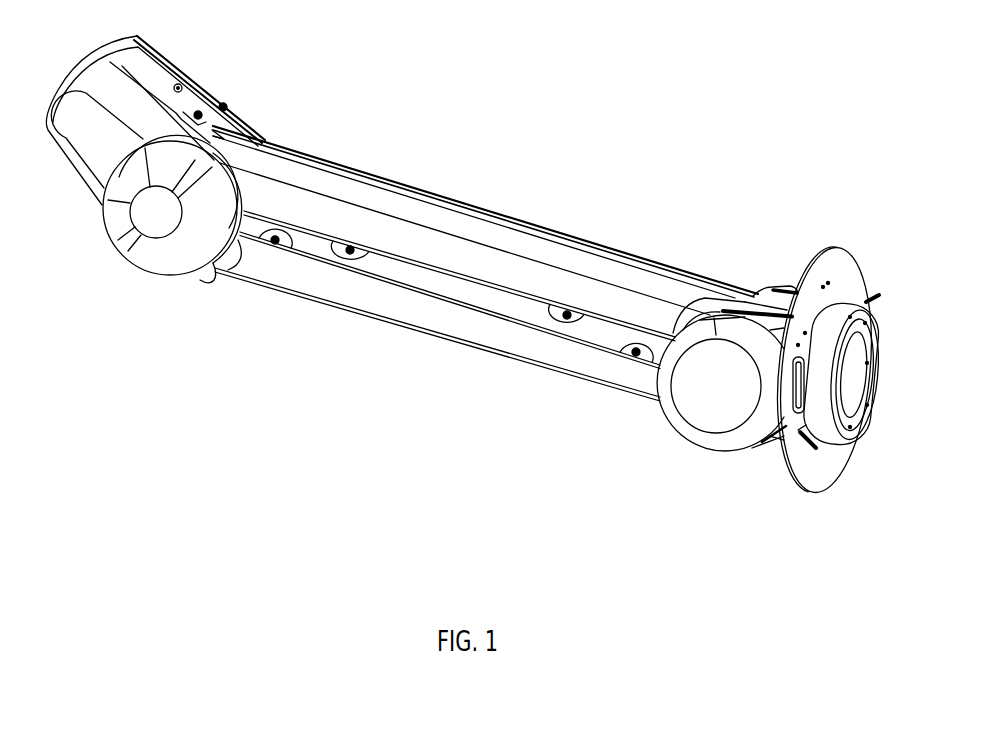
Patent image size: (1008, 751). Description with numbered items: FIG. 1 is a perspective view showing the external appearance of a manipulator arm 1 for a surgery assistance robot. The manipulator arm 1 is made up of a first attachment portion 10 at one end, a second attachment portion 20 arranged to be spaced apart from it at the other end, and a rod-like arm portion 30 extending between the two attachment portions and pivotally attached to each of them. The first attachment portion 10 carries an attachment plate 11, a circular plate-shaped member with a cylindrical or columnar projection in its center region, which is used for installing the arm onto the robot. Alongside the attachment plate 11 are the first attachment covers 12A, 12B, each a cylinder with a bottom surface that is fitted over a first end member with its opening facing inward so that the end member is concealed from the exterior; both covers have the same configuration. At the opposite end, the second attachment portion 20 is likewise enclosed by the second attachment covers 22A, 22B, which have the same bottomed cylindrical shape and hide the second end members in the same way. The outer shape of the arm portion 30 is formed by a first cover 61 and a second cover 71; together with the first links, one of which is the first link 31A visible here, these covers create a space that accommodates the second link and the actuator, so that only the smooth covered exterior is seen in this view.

The manipulator arm 1 is at (716, 65).
The first attachment portion 10 is at (739, 515).
The attachment plate 11 is at (835, 262).
The first attachment cover 12A is at (700, 417).
The first attachment cover 12B is at (766, 283).
The second attachment portion 20 is at (155, 372).
The second attachment cover 22A is at (156, 248).
The second attachment cover 22B is at (190, 77).
The arm portion 30 is at (447, 445).
The first link 31A is at (450, 288).
The first cover 61 is at (462, 222).
The second cover 71 is at (312, 282).